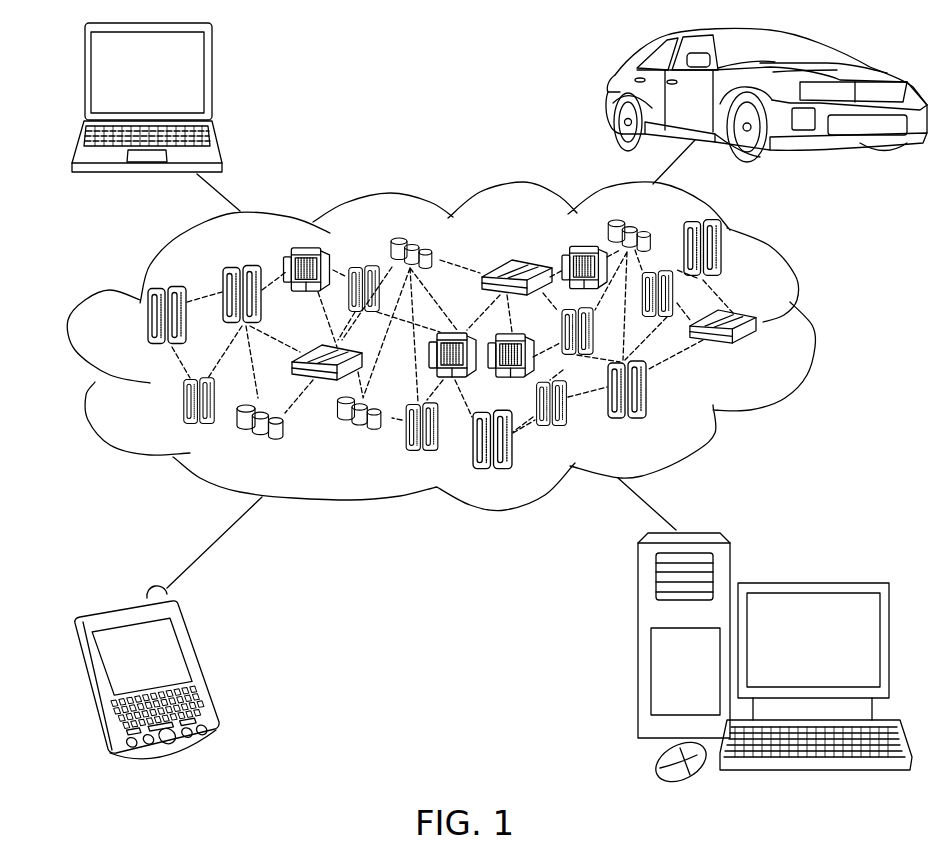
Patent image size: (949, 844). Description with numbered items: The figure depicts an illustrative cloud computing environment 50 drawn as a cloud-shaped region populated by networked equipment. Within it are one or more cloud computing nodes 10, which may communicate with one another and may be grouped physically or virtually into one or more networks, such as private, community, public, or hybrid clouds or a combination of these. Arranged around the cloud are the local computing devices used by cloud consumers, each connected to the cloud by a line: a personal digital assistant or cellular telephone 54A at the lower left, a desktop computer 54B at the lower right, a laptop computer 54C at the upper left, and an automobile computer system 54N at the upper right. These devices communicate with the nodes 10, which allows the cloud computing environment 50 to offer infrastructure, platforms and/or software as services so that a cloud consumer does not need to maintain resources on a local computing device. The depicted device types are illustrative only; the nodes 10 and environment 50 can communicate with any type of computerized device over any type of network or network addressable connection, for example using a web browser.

The cloud computing node 10 is at (758, 352).
The cloud computing environment 50 is at (810, 324).
The personal digital assistant or cellular telephone 54A is at (200, 668).
The desktop computer 54B is at (810, 583).
The laptop computer 54C is at (212, 80).
The automobile computer system 54N is at (610, 92).